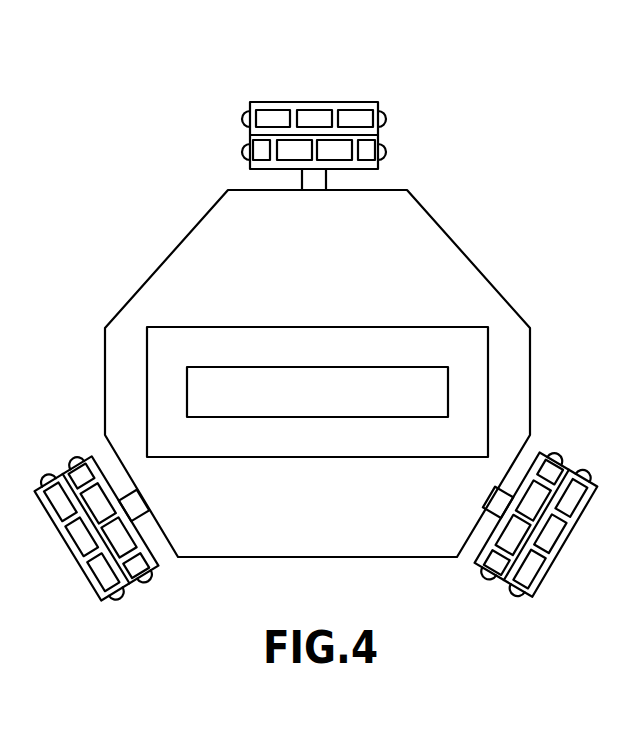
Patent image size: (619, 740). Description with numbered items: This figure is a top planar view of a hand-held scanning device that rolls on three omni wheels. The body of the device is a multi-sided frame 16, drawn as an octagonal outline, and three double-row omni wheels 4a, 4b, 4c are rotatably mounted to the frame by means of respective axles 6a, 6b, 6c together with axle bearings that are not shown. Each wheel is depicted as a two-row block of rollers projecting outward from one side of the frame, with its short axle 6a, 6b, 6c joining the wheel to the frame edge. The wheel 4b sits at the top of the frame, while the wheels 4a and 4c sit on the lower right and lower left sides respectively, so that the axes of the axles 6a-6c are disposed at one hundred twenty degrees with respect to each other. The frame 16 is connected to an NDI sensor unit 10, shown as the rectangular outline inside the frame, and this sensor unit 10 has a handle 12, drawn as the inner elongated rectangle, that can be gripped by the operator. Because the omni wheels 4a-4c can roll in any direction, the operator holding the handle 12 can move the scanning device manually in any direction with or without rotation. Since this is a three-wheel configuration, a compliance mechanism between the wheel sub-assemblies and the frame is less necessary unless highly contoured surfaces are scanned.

The NDI sensor unit 10 is at (452, 318).
The handle 12 is at (300, 366).
The multi-sided frame 16 is at (178, 248).
The double-row omni wheel 4a is at (563, 548).
The double-row omni wheel 4b is at (311, 108).
The double-row omni wheel 4c is at (63, 534).
The axle 6a is at (505, 480).
The axle 6b is at (329, 184).
The axle 6c is at (128, 490).